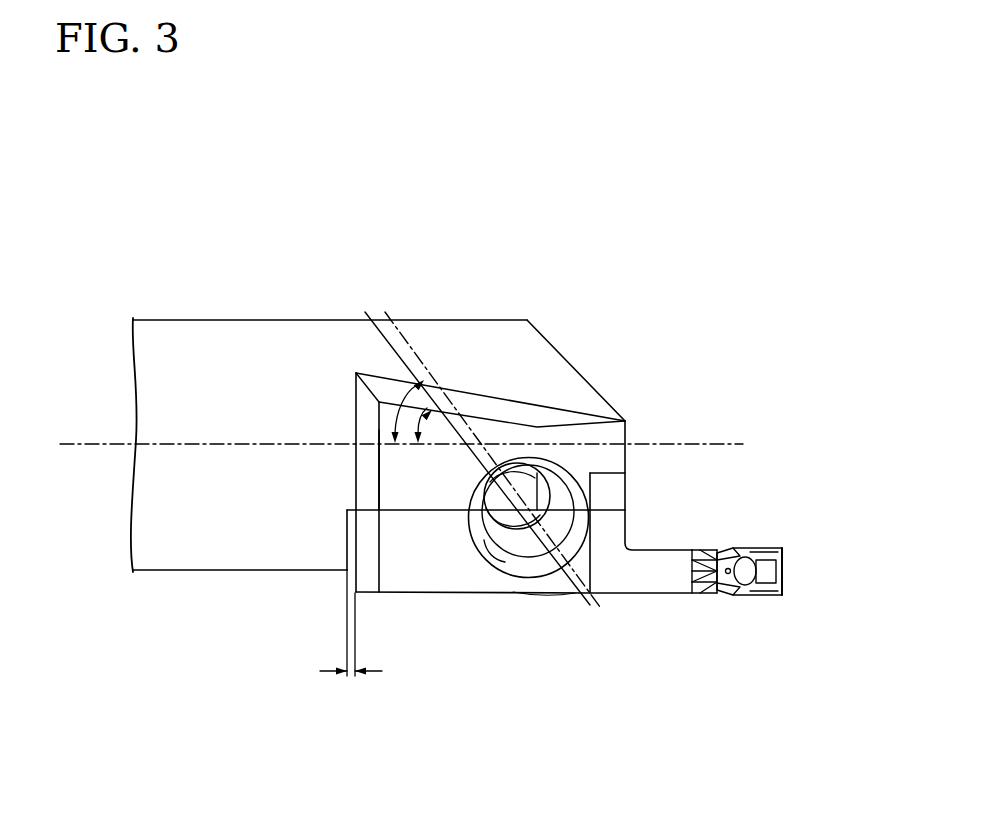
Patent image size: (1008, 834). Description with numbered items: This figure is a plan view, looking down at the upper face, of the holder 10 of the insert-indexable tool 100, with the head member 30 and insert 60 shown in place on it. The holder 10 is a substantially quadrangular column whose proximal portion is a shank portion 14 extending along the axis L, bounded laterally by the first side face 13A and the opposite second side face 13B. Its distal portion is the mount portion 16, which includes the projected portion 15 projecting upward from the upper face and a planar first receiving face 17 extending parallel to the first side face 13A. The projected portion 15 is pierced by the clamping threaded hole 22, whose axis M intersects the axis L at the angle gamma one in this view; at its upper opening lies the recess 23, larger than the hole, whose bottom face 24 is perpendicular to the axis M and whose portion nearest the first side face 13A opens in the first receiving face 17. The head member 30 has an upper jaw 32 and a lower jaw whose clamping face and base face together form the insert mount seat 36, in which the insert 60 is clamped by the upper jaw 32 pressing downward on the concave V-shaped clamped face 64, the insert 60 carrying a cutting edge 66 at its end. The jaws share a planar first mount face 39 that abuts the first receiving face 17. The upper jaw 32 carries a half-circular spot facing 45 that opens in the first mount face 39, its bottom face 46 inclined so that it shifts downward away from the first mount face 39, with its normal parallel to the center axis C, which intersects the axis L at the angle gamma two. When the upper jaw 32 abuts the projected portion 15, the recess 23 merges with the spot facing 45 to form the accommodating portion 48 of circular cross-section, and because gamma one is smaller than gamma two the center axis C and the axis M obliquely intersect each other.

The insert-indexable tool 100 is at (700, 270).
The holder 10 is at (233, 230).
The shank portion 14 is at (160, 273).
The first side face 13A is at (252, 572).
The second side face 13B is at (278, 320).
The mount portion 16 is at (520, 228).
The projected portion 15 is at (367, 463).
The first receiving face 17 is at (423, 527).
The first mount face 39 is at (398, 495).
The accommodating portion 48 is at (613, 495).
The clamping threaded hole 22 is at (526, 478).
The recess 23 is at (553, 455).
The bottom face of the recess 24 is at (565, 482).
The spot facing 45 is at (510, 590).
The bottom face of the spot facing 46 is at (498, 560).
The head member 30 is at (551, 642).
The upper jaw 32 is at (620, 580).
The insert mount seat 36 is at (730, 518).
The clamped face 64 is at (702, 580).
The insert 60 is at (774, 622).
The cutting edge 66 is at (781, 572).
The axis L is at (80, 438).
The center axis C is at (405, 330).
The axis of the clamping threaded hole M is at (386, 340).